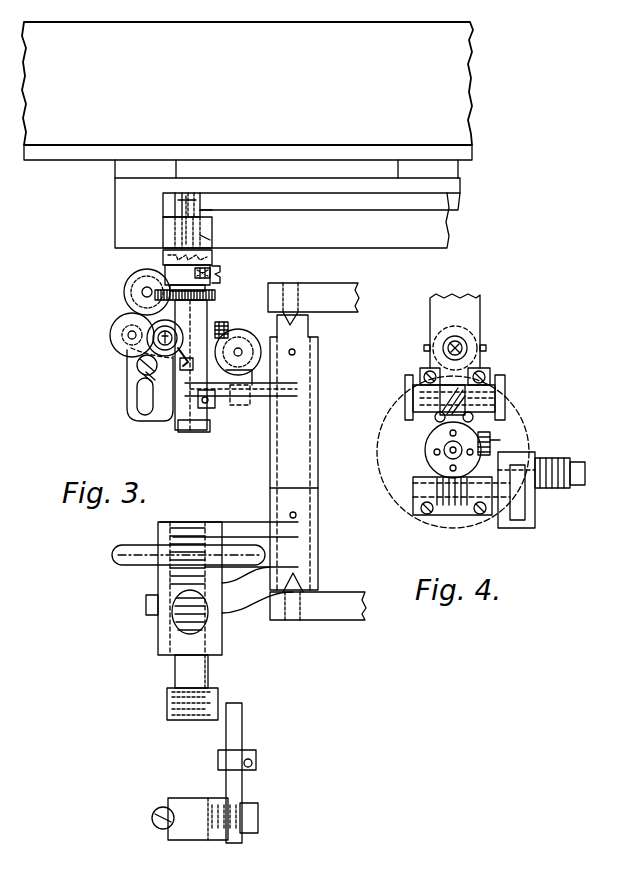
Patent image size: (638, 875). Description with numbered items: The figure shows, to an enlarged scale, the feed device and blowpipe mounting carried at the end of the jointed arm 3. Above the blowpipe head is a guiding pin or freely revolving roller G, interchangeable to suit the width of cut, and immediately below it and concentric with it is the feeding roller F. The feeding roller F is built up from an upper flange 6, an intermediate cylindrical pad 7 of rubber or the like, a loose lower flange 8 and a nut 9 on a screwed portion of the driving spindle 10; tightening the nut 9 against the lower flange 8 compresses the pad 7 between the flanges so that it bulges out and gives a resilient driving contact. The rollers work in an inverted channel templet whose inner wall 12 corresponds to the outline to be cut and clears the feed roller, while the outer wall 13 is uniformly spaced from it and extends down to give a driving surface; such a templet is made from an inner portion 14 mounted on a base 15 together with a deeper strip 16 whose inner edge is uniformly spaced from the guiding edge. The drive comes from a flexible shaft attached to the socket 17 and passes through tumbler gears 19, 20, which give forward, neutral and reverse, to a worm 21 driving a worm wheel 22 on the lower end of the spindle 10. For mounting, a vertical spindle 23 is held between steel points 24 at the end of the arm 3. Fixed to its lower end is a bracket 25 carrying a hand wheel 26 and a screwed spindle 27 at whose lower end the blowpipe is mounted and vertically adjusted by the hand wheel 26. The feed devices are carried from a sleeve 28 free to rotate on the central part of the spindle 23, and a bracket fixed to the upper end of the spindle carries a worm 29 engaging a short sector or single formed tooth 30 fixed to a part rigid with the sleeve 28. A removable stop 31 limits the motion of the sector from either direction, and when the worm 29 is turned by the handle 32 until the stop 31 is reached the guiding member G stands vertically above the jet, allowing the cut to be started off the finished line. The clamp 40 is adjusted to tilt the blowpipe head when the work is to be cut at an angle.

In FIG. 3, the jointed arm 3 is at (325, 300).
In FIG. 4, the jointed arm 3 is at (455, 313).
In FIG. 3, the upper flange 6 is at (207, 215).
In FIG. 3, the intermediate cylindrical pad 7 is at (165, 233).
In FIG. 3, the loose lower flange 8 is at (165, 253).
In FIG. 3, the nut 9 is at (212, 258).
In FIG. 3, the driving spindle 10 is at (222, 275).
In FIG. 3, the inner wall 12 is at (195, 200).
In FIG. 3, the outer wall 13 is at (163, 206).
In FIG. 3, the inner portion 14 is at (290, 202).
In FIG. 3, the base 15 is at (262, 190).
In FIG. 3, the strip 16 is at (137, 212).
In FIG. 3, the socket 17 is at (140, 352).
In FIG. 3, the tumbler gear 19 is at (147, 340).
In FIG. 3, the tumbler gear 20 is at (140, 285).
In FIG. 4, the tumbler gear 20 is at (520, 465).
In FIG. 3, the worm 21 is at (122, 318).
In FIG. 4, the worm 21 is at (445, 515).
In FIG. 3, the worm wheel 22 is at (216, 297).
In FIG. 4, the worm wheel 22 is at (428, 445).
In FIG. 3, the vertical spindle 23 is at (318, 330).
In FIG. 3, the steel points 24 is at (292, 312).
In FIG. 3, the bracket 25 is at (262, 530).
In FIG. 3, the hand wheel 26 is at (122, 558).
In FIG. 3, the screwed spindle 27 is at (170, 528).
In FIG. 3, the sleeve 28 is at (270, 470).
In FIG. 3, the worm 29 is at (246, 336).
In FIG. 4, the worm 29 is at (484, 372).
In FIG. 3, the sector or formed tooth 30 is at (237, 376).
In FIG. 4, the removable stop 31 is at (420, 410).
In FIG. 3, the handle 32 is at (248, 406).
In FIG. 4, the handle 32 is at (500, 382).
In FIG. 3, the clamp 40 is at (188, 825).
In FIG. 3, the guiding pin or roller G is at (186, 196).
In FIG. 4, the guiding pin or roller G is at (462, 448).
In FIG. 3, the feeding roller F is at (208, 238).
In FIG. 4, the feeding roller F is at (430, 458).